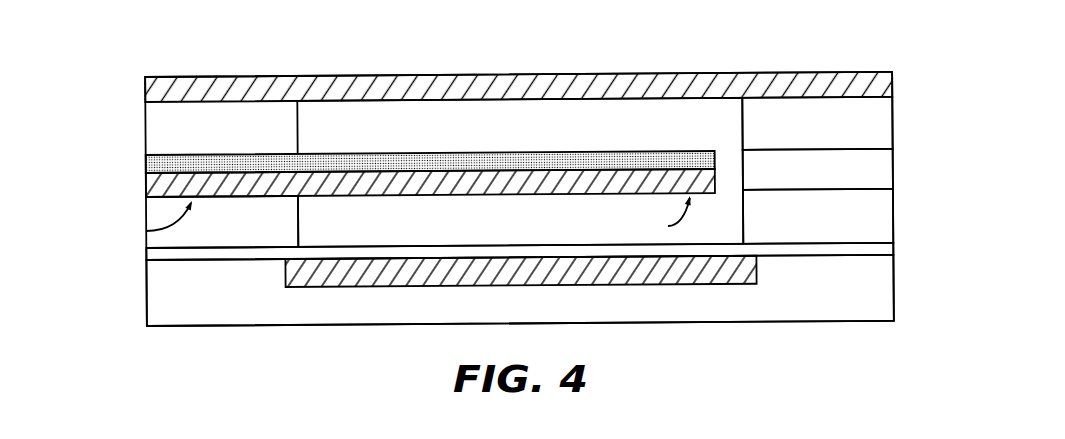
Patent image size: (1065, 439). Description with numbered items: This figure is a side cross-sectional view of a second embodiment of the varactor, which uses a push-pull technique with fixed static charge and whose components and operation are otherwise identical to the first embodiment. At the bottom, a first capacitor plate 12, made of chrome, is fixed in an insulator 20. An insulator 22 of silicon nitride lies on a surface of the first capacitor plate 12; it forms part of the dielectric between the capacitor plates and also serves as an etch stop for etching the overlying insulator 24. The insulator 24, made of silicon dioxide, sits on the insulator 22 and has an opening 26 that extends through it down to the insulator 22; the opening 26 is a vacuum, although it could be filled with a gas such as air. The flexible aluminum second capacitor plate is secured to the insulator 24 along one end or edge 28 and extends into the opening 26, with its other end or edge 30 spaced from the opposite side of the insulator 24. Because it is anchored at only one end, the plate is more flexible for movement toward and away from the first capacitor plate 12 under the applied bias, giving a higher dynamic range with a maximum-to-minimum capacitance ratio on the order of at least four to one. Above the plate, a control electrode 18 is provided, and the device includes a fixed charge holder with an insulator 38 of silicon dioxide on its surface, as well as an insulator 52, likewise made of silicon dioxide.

The first capacitor plate 12 is at (727, 277).
The control electrode 18 is at (710, 78).
The insulator 20 is at (147, 299).
The insulator 22 is at (147, 256).
The insulator 24 is at (887, 215).
The opening 26 is at (532, 230).
The end or edge 28 is at (146, 231).
The end or edge 30 is at (668, 226).
The insulator 38 is at (887, 113).
The insulator 52 is at (887, 170).